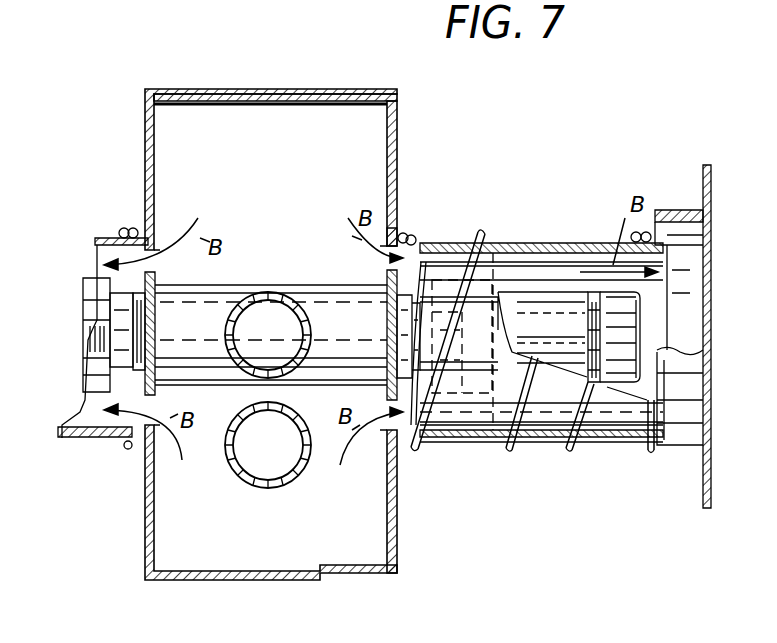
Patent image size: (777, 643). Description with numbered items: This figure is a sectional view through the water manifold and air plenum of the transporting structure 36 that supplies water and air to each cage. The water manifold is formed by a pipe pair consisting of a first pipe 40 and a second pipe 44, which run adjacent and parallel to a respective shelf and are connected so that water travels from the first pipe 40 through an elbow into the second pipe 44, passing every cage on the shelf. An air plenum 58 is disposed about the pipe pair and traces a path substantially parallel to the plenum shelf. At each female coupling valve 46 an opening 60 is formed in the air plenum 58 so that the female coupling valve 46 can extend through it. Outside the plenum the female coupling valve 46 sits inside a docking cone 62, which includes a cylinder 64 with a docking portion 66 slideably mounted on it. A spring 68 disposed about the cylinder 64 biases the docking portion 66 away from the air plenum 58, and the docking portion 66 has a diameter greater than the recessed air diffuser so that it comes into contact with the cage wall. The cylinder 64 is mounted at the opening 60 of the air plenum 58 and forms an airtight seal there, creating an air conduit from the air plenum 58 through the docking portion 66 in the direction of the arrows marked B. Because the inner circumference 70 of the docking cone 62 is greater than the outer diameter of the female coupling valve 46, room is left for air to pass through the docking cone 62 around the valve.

The transporting structure 36 is at (88, 452).
The first pipe 40 is at (292, 282).
The second pipe 44 is at (286, 488).
The female coupling valve 46 is at (84, 376).
The air plenum 58 is at (398, 152).
The openings 60 is at (161, 243).
The docking cone 62 is at (597, 216).
The cylinder 64 is at (488, 238).
The docking portion 66 is at (711, 205).
The spring 68 is at (120, 230).
The inner circumference 70 is at (492, 436).